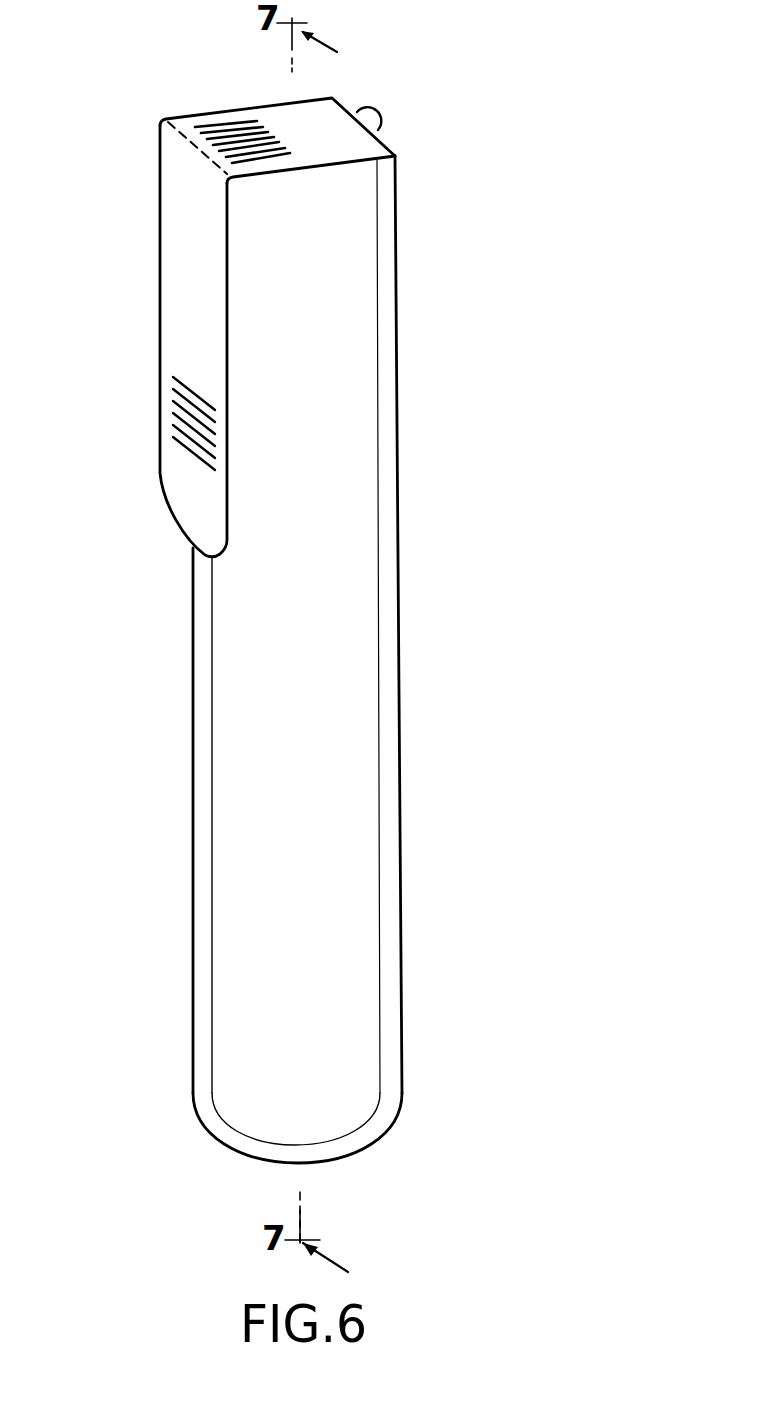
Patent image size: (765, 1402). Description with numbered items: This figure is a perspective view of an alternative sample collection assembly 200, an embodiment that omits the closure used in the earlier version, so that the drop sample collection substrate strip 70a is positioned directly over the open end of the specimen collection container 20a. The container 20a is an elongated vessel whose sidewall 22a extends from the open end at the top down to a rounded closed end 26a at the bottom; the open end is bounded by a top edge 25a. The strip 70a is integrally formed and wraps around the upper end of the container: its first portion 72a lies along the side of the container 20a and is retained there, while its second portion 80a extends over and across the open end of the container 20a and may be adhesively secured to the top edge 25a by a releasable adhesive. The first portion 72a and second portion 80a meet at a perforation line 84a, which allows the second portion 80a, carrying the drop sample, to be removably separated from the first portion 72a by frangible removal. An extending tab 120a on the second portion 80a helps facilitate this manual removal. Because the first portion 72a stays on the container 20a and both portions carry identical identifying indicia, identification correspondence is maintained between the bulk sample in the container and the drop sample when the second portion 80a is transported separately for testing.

The sample collection assembly 200 is at (484, 304).
The specimen collection container 20a is at (367, 523).
The sidewall 22a is at (198, 880).
The top edge 25a is at (395, 157).
The closed end 26a is at (368, 1132).
The drop sample collection substrate strip 70a is at (173, 227).
The first portion 72a is at (188, 323).
The second portion 80a is at (328, 110).
The perforation line 84a is at (190, 143).
The extending tab 120a is at (377, 113).